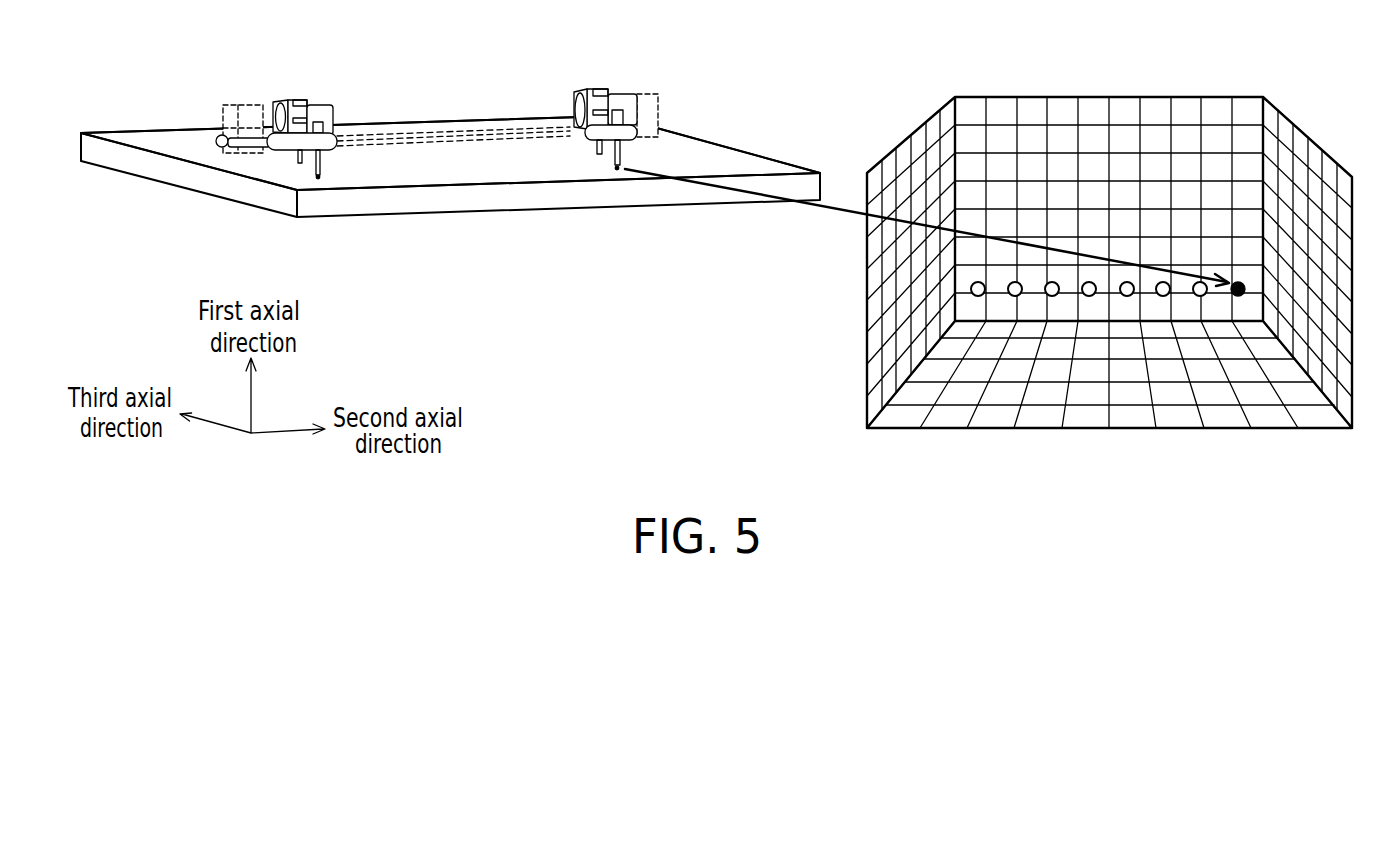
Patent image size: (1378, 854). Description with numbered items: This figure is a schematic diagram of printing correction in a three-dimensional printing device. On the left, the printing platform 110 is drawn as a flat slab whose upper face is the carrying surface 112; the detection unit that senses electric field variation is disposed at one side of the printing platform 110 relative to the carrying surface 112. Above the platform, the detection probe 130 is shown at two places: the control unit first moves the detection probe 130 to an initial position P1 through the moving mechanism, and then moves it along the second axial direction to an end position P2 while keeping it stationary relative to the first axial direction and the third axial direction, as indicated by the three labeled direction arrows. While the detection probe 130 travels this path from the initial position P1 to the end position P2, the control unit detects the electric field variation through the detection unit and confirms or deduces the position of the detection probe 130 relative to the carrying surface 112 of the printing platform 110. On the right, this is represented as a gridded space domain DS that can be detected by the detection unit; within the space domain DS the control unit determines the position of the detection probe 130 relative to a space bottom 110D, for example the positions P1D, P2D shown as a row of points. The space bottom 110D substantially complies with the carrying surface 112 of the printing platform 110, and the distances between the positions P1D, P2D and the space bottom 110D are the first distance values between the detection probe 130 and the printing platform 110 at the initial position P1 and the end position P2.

The printing platform 110 is at (480, 203).
The carrying surface 112 is at (163, 140).
The detection probe 130 is at (323, 167).
The initial position P1 is at (322, 191).
The end position P2 is at (622, 182).
The space domain DS is at (940, 110).
The position P1D is at (1085, 272).
The position P2D is at (1236, 272).
The space bottom 110D is at (1268, 423).